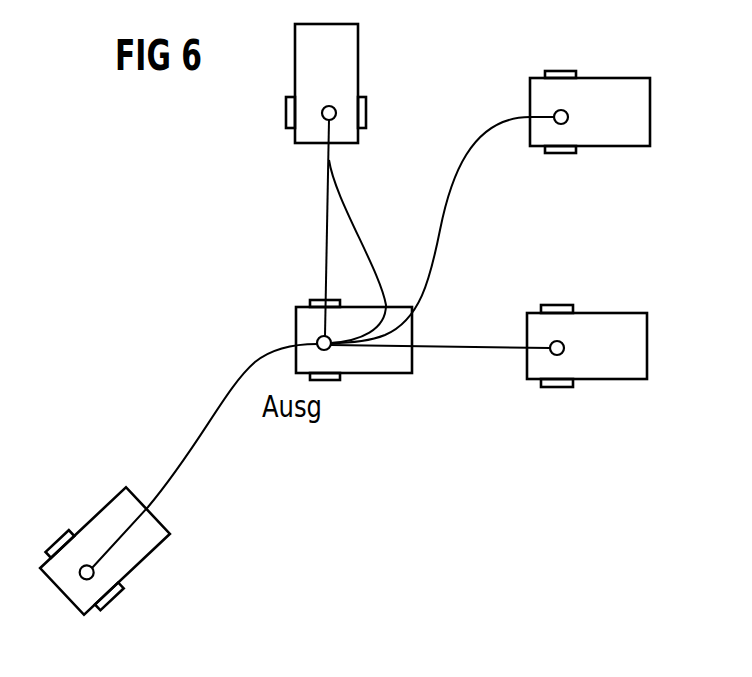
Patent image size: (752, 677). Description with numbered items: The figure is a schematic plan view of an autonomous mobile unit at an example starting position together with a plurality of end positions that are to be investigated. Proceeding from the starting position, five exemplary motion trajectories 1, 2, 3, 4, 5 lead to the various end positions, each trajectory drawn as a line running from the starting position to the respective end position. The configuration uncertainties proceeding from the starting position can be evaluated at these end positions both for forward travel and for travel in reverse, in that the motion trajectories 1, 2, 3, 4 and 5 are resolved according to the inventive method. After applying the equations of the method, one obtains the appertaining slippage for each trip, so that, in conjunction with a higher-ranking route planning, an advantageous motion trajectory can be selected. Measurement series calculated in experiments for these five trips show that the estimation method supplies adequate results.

The motion trajectory 1 is at (489, 346).
The motion trajectory 2 is at (490, 207).
The motion trajectory 3 is at (176, 482).
The motion trajectory 4 is at (359, 251).
The motion trajectory 5 is at (311, 228).